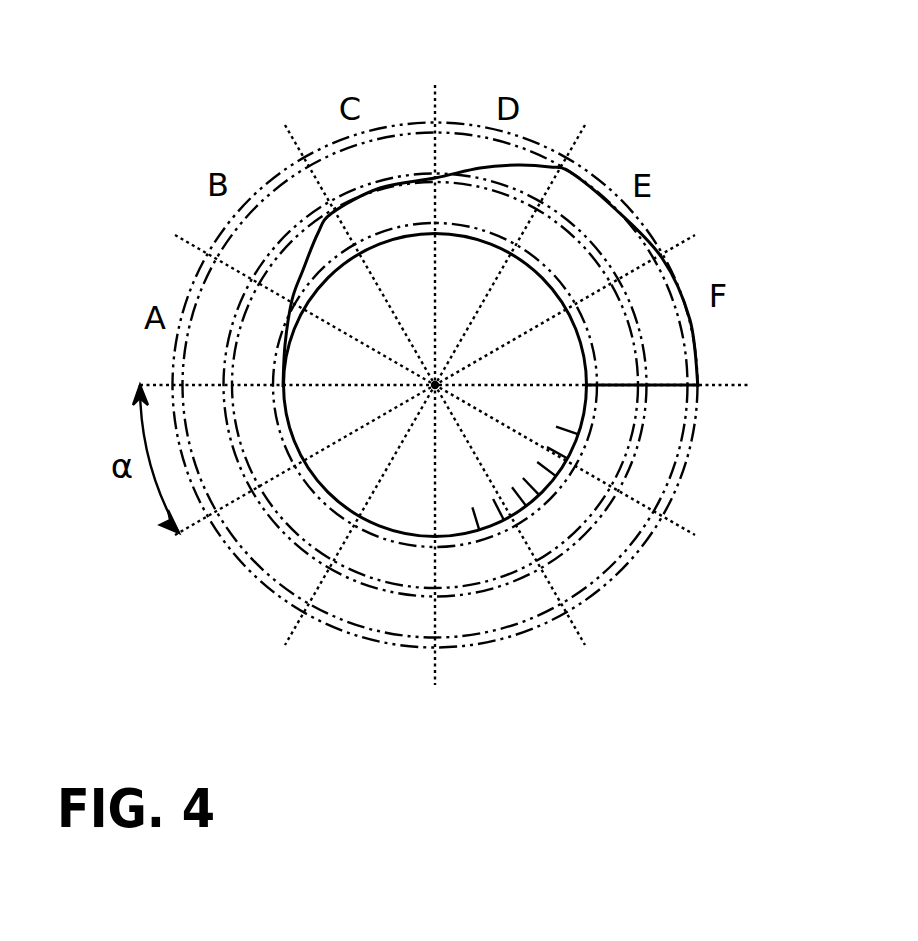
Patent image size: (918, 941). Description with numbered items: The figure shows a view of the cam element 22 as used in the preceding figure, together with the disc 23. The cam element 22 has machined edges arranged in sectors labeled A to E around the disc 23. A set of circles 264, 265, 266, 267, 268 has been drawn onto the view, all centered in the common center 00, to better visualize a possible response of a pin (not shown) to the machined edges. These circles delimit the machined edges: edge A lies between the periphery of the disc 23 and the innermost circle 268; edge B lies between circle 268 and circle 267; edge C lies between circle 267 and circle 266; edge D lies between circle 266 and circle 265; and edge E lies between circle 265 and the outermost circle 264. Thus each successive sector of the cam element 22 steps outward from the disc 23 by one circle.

The center 00 is at (432, 419).
The cam element 22 is at (582, 215).
The disc 23 is at (410, 507).
The circle 264 is at (697, 438).
The circle 265 is at (662, 464).
The circle 266 is at (603, 517).
The circle 267 is at (568, 522).
The circle 268 is at (485, 537).